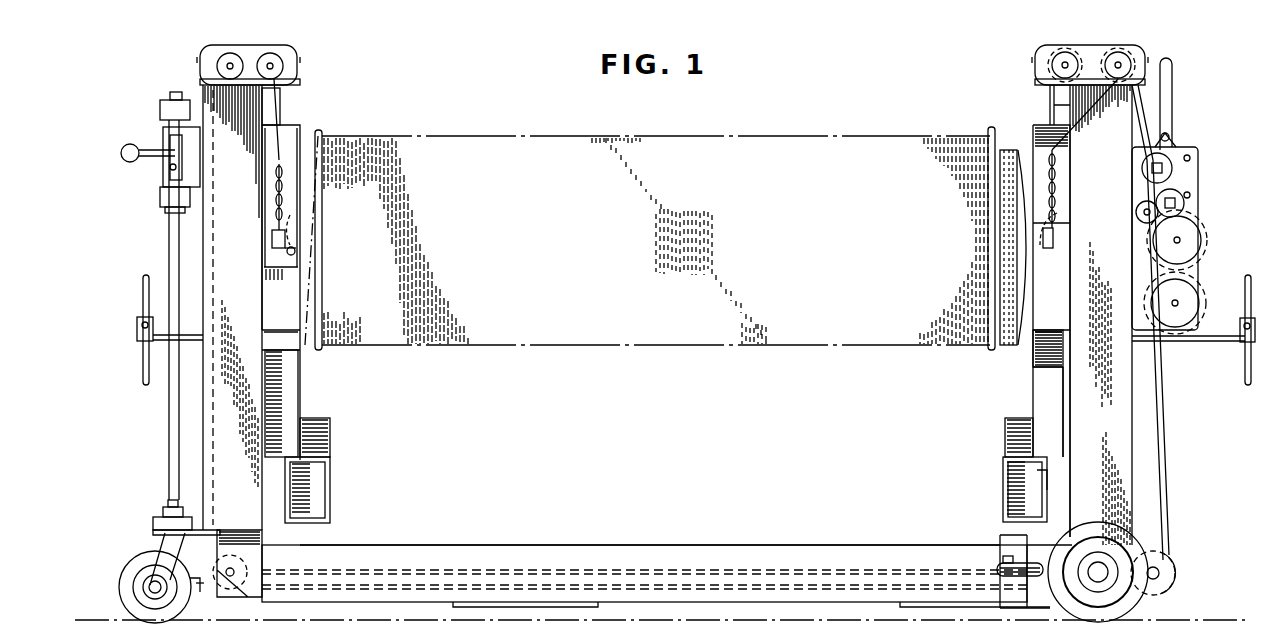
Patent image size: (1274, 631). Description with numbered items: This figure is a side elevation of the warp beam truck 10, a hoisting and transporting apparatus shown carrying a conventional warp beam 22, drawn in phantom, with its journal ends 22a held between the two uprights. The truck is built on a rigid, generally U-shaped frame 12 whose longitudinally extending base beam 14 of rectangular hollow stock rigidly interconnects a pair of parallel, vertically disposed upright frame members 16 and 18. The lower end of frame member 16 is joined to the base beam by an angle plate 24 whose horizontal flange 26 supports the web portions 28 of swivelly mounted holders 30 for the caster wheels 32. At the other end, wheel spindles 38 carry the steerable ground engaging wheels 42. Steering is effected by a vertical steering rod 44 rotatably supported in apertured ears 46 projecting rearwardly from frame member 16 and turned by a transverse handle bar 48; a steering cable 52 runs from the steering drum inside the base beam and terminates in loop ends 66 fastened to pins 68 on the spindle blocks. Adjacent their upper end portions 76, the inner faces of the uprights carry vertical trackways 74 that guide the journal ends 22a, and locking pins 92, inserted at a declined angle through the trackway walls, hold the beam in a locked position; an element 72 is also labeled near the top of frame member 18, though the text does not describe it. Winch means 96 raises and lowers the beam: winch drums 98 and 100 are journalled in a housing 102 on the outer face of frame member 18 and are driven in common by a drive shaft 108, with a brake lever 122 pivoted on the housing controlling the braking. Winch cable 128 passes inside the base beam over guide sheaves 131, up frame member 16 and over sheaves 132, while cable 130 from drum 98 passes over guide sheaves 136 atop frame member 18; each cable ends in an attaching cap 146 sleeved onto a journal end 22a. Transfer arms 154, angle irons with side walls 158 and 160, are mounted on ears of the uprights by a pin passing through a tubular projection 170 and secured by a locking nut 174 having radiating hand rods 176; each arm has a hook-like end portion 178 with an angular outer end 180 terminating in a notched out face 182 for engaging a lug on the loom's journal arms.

The warp beam truck 10 is at (607, 520).
The frame 12 is at (424, 535).
The base beam 14 is at (538, 545).
The upright frame member 16 is at (227, 430).
The upright frame member 18 is at (1124, 484).
The warp beam 22 is at (458, 152).
The journal ends 22a is at (293, 227).
The angle plate 24 is at (236, 522).
The horizontal flange 26 is at (163, 517).
The web portions 28 is at (153, 528).
The holders 30 is at (157, 563).
The caster wheels 32 is at (123, 593).
The wheel spindles 38 is at (1098, 572).
The ground engaging wheels 42 is at (1082, 530).
The steering rod 44 is at (172, 258).
The apertured ears 46 is at (160, 120).
The handle bar 48 is at (121, 153).
The steering cable 52 is at (199, 585).
The loop ends 66 is at (1000, 572).
The pins 68 is at (1007, 558).
The post 72 is at (1050, 92).
The trackways 74 is at (303, 130).
The upper end portions 76 is at (288, 100).
The locking pins 92 is at (296, 250).
The winch means 96 is at (1206, 195).
The winch drum 98 is at (1187, 232).
The winch drum 100 is at (1187, 297).
The housing 102 is at (1192, 177).
The drive shaft 108 is at (1147, 170).
The brake lever 122 is at (1168, 67).
The winch cable 128 is at (282, 120).
The winch cable 130 is at (1043, 88).
The guide sheaves 131 is at (260, 562).
The sheaves 132 is at (198, 54).
The guide sheaves 136 is at (1082, 76).
The attaching cap 146 is at (272, 238).
The transfer arms 154 is at (311, 379).
The side wall 158 is at (1067, 367).
The side wall 160 is at (287, 412).
The tubular projection 170 is at (188, 323).
The locking nut 174 is at (135, 335).
The hand rods 176 is at (143, 292).
The hook-like end portion 178 is at (330, 503).
The angular outer end 180 is at (330, 477).
The notched out face 182 is at (1043, 480).